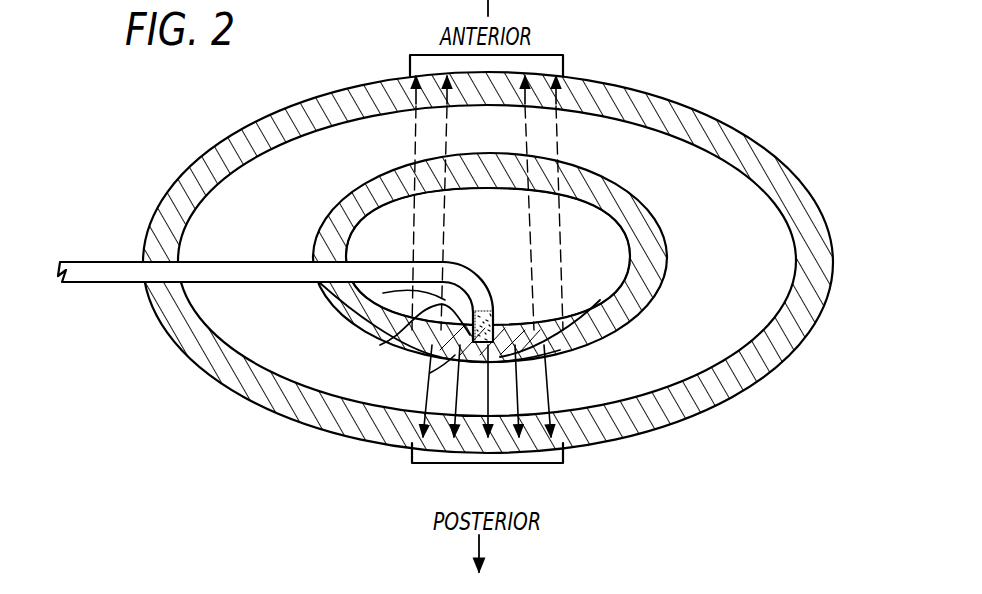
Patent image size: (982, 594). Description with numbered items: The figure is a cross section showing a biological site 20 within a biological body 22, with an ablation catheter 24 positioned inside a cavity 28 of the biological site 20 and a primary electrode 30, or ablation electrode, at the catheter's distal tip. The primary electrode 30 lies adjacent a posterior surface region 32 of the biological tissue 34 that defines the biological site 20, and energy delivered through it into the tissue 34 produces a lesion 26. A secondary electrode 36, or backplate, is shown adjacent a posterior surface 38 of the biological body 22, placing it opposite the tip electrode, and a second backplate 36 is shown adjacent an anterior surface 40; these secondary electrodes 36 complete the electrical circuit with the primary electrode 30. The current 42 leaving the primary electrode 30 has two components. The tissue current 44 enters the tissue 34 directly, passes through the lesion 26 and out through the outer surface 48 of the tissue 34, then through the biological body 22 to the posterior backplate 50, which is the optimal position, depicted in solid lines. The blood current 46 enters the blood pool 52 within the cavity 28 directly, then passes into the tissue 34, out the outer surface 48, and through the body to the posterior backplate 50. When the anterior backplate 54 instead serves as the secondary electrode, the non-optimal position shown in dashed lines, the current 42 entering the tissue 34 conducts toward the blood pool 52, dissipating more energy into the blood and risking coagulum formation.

The biological site 20 is at (651, 234).
The biological body 22 is at (780, 157).
The ablation catheter 24 is at (245, 262).
The lesion 26 is at (537, 348).
The cavity 28 is at (603, 267).
The primary electrode 30 is at (605, 322).
The posterior surface region 32 is at (380, 348).
The biological tissue 34 is at (425, 324).
The secondary electrode 36 is at (544, 55).
The posterior surface 38 is at (583, 447).
The anterior surface 40 is at (640, 85).
The current 42 is at (342, 137).
The tissue current 44 is at (412, 139).
The blood current 46 is at (418, 144).
The outer surface 48 is at (430, 373).
The posterior backplate 50 is at (430, 464).
The blood pool 52 is at (383, 293).
The anterior backplate 54 is at (428, 55).